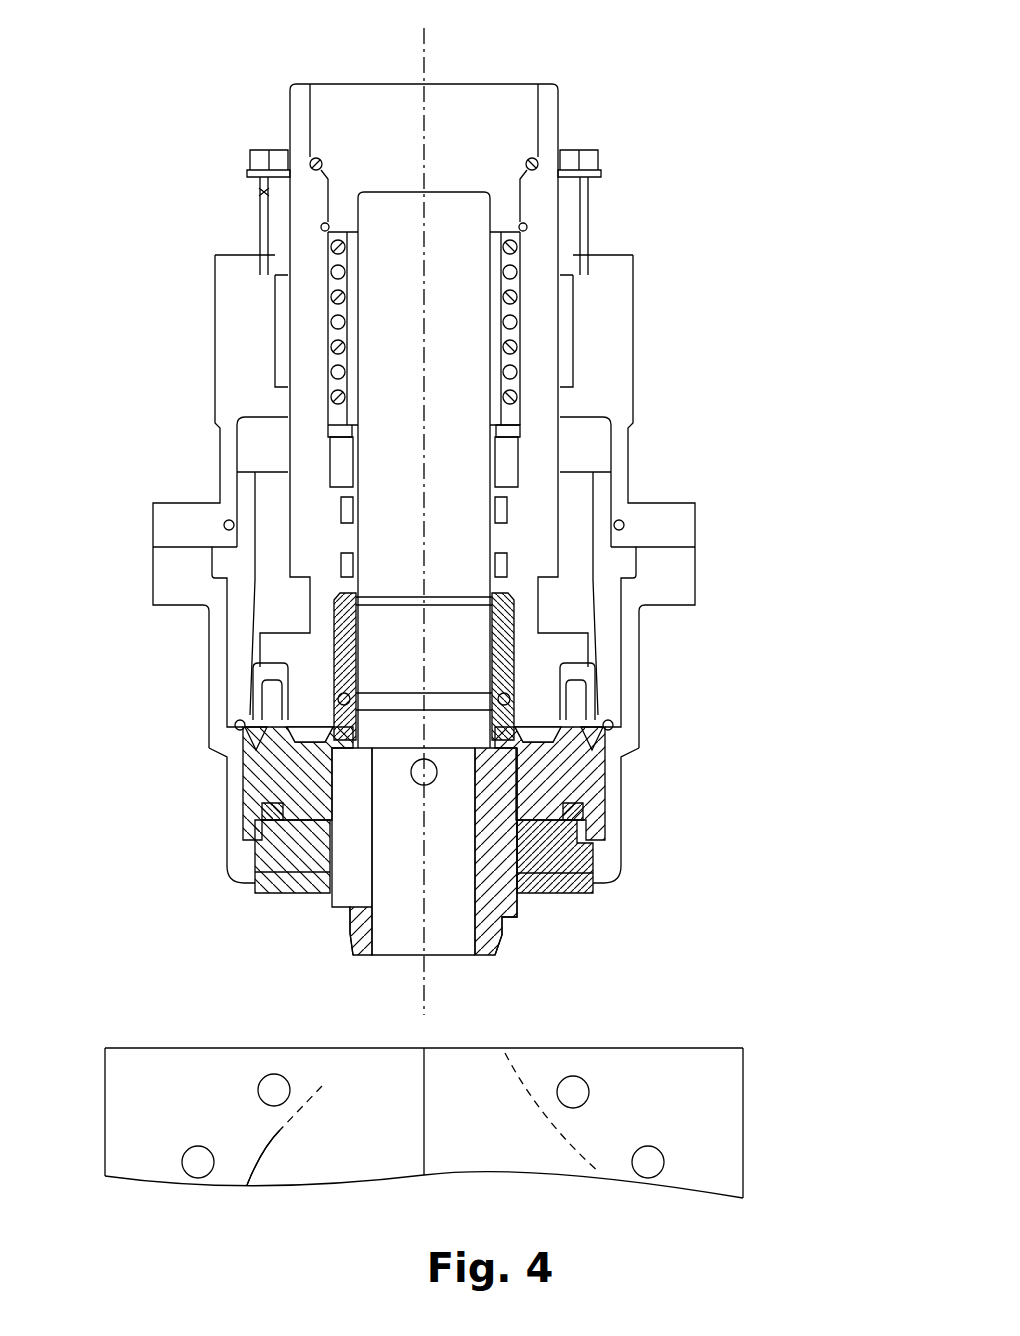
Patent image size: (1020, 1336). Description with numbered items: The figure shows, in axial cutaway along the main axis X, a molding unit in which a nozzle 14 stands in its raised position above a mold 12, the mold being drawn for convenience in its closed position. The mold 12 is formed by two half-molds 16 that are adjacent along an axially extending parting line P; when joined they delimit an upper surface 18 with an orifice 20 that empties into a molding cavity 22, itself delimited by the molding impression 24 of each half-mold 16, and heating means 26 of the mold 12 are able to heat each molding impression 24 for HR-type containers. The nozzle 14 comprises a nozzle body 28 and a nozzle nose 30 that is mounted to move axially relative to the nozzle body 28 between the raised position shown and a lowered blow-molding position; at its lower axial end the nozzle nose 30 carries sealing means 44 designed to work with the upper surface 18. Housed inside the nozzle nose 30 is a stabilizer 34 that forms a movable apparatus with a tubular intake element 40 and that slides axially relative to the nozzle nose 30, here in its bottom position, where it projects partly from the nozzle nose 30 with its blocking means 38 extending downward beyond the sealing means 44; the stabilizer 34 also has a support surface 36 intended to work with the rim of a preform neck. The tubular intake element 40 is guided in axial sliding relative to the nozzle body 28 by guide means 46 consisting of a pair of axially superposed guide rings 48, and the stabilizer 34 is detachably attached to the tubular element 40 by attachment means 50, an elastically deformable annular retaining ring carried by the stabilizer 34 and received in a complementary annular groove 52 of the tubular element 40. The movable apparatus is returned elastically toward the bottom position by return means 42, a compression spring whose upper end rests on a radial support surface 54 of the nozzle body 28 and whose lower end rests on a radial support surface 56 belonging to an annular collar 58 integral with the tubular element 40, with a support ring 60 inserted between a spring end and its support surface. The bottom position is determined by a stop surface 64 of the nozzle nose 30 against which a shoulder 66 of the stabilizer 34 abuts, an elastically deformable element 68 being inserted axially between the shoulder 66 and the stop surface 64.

The mold 12 is at (713, 1030).
The nozzle 14 is at (712, 212).
The half-mold 16 is at (143, 1080).
The upper surface 18 is at (198, 1043).
The orifice 20 is at (328, 1073).
The molding cavity 22 is at (343, 1133).
The molding impression 24 is at (278, 1132).
The heating means 26 is at (648, 1162).
The nozzle body 28 is at (320, 542).
The nozzle nose 30 is at (218, 710).
The stabilizer 34 is at (555, 774).
The support surface 36 is at (346, 918).
The blocking means 38 is at (490, 937).
The tubular intake element 40 is at (373, 458).
The return means 42 is at (500, 325).
The sealing means 44 is at (293, 883).
The guide means 46 is at (315, 507).
The guide rings 48 is at (535, 562).
The attachment means 50 is at (498, 692).
The annular groove 52 is at (365, 747).
The radial support surface 54 is at (330, 234).
The radial support surface 56 is at (520, 412).
The annular collar 58 is at (513, 458).
The support ring 60 is at (345, 268).
The stop surface 64 is at (583, 835).
The shoulder 66 is at (583, 787).
The elastically deformable element 68 is at (280, 808).
The parting line P is at (432, 1083).
The main axis X is at (428, 50).